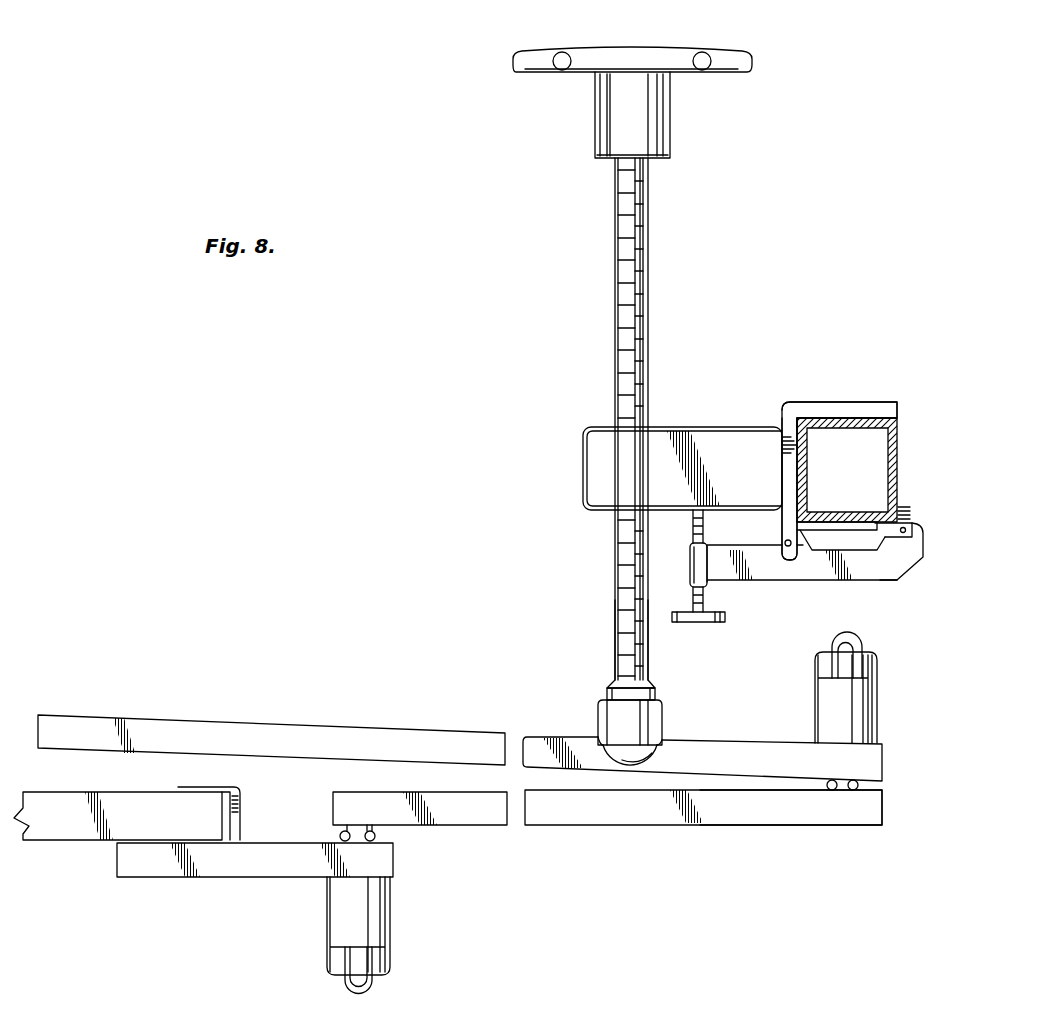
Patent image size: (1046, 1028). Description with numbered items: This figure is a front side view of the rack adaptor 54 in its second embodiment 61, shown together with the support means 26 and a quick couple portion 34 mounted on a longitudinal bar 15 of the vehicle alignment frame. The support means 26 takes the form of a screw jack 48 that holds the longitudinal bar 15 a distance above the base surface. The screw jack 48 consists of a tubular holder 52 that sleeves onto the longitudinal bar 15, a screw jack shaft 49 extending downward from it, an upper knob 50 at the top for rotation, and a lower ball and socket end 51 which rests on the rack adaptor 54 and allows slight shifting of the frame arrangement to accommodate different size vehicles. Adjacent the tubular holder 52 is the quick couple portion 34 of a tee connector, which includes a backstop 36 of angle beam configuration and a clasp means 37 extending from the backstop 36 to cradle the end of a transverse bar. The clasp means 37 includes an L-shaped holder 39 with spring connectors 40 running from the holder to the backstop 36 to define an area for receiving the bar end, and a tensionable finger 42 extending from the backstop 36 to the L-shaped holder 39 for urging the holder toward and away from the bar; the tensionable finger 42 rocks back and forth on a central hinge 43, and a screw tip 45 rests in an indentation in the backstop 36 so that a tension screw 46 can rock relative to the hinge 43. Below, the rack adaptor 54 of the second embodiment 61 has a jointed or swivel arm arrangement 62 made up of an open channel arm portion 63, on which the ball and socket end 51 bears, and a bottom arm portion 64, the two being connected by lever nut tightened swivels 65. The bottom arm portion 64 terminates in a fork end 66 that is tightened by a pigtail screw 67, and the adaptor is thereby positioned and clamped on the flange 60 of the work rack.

The longitudinal bar 15 is at (897, 445).
The support means 26 is at (615, 660).
The quick couple portion 34 is at (855, 402).
The backstop 36 is at (782, 467).
The clasp means 37 is at (832, 582).
The L-shaped holder 39 is at (917, 495).
The spring connectors 40 is at (860, 522).
The tensionable finger 42 is at (905, 570).
The central hinge 43 is at (784, 543).
The screw tip 45 is at (693, 512).
The tension screw 46 is at (707, 602).
The screw jack 48 is at (583, 480).
The screw jack shaft 49 is at (615, 340).
The upper knob 50 is at (640, 48).
The ball and socket end 51 is at (662, 722).
The tubular holder 52 is at (810, 402).
The rack adaptor 54 is at (652, 825).
The rack flange 60 is at (48, 843).
The second embodiment of rack adaptor 61 is at (160, 715).
The swivel arm arrangement 62 is at (487, 827).
The open channel arm portion 63 is at (585, 737).
The bottom arm portion 64 is at (785, 825).
The lever nut tightened swivels 65 is at (860, 782).
The fork end 66 is at (187, 787).
The pigtail screw 67 is at (862, 632).